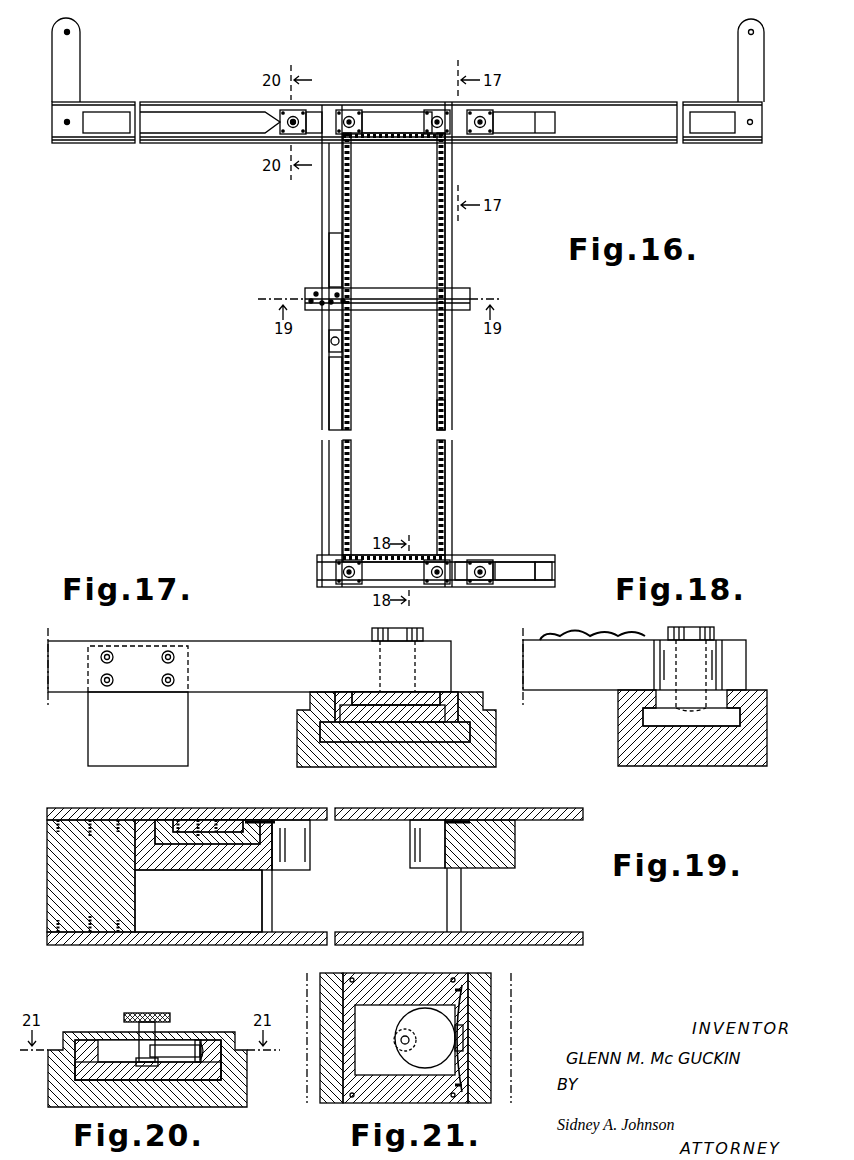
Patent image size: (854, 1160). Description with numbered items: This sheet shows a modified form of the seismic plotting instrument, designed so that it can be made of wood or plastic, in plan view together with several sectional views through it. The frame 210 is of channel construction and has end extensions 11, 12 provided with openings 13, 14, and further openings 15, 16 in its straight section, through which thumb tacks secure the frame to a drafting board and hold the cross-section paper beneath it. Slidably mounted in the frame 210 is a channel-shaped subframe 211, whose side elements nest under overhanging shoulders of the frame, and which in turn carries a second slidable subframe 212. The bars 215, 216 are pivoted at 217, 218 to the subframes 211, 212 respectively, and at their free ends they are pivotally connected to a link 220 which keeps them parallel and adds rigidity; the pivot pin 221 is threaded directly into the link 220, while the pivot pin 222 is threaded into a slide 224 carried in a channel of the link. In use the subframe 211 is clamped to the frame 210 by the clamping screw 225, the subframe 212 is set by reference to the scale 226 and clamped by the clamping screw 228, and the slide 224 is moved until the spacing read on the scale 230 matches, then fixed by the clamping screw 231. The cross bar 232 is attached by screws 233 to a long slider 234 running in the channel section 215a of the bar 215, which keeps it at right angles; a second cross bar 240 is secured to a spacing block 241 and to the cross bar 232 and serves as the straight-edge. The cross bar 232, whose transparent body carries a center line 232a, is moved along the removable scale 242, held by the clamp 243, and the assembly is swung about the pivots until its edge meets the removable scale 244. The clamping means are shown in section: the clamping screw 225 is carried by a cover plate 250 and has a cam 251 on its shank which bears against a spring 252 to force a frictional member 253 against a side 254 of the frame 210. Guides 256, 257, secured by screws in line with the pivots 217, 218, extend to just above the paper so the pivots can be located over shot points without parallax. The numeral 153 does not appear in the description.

In FIG. 16, the extension 11 is at (72, 73).
In FIG. 16, the extension 12 is at (746, 62).
In FIG. 16, the opening 13 is at (70, 33).
In FIG. 16, the opening 14 is at (748, 32).
In FIG. 16, the opening 15 is at (63, 122).
In FIG. 16, the opening 16 is at (753, 124).
In FIG. 20, the spring 153 is at (202, 1054).
In FIG. 16, the frame 210 is at (170, 102).
In FIG. 17, the frame 210 is at (300, 730).
In FIG. 20, the frame 210 is at (56, 1087).
In FIG. 21, the frame 210 is at (485, 1080).
In FIG. 16, the subframe 211 is at (316, 118).
In FIG. 17, the subframe 211 is at (337, 740).
In FIG. 20, the subframe 211 is at (222, 1065).
In FIG. 21, the subframe 211 is at (340, 1100).
In FIG. 16, the second slidable subframe 212 is at (520, 118).
In FIG. 17, the second slidable subframe 212 is at (432, 709).
In FIG. 16, the bar 215 is at (330, 215).
In FIG. 19, the bar 215 is at (172, 870).
In FIG. 16, the channel section 215a is at (333, 392).
In FIG. 16, the bar 216 is at (450, 254).
In FIG. 17, the bar 216 is at (211, 680).
In FIG. 18, the bar 216 is at (740, 662).
In FIG. 19, the bar 216 is at (505, 850).
In FIG. 16, the pivot 217 is at (354, 117).
In FIG. 16, the pivot pin 218 is at (433, 115).
In FIG. 17, the pivot pin 218 is at (412, 628).
In FIG. 16, the link 220 is at (493, 556).
In FIG. 18, the link 220 is at (655, 766).
In FIG. 16, the pivot pin 221 is at (352, 580).
In FIG. 16, the pivot pin 222 is at (440, 580).
In FIG. 18, the pivot pin 222 is at (710, 630).
In FIG. 16, the slide 224 is at (460, 556).
In FIG. 18, the slide 224 is at (652, 718).
In FIG. 16, the clamping screw 225 is at (287, 127).
In FIG. 20, the clamping screw 225 is at (160, 1013).
In FIG. 21, the clamping screw 225 is at (403, 1044).
In FIG. 16, the scale 226 is at (400, 136).
In FIG. 16, the clamping screw 228 is at (487, 117).
In FIG. 16, the scale 230 is at (348, 555).
In FIG. 16, the clamping screw 231 is at (482, 581).
In FIG. 16, the cross bar 232 is at (375, 290).
In FIG. 19, the cross bar 232 is at (405, 807).
In FIG. 16, the center line 232a is at (410, 302).
In FIG. 16, the screws 233 is at (349, 287).
In FIG. 19, the screws 233 is at (215, 818).
In FIG. 16, the slider 234 is at (336, 252).
In FIG. 19, the slider 234 is at (232, 820).
In FIG. 19, the second cross bar 240 is at (135, 946).
In FIG. 19, the spacing block 241 is at (122, 924).
In FIG. 16, the removable scale 242 is at (349, 396).
In FIG. 19, the removable scale 242 is at (288, 803).
In FIG. 16, the clamp 243 is at (331, 343).
In FIG. 16, the removable scale 244 is at (438, 427).
In FIG. 18, the removable scale 244 is at (530, 640).
In FIG. 19, the removable scale 244 is at (470, 818).
In FIG. 16, the cover plate 250 is at (282, 118).
In FIG. 20, the cover plate 250 is at (100, 1032).
In FIG. 20, the cam 251 is at (221, 1080).
In FIG. 21, the cam 251 is at (410, 1028).
In FIG. 20, the spring 252 is at (200, 1048).
In FIG. 21, the spring 252 is at (462, 1005).
In FIG. 20, the frictional member 253 is at (170, 1050).
In FIG. 21, the frictional member 253 is at (463, 1035).
In FIG. 21, the side 254 is at (463, 1058).
In FIG. 16, the guide 256 is at (349, 197).
In FIG. 19, the guide 256 is at (270, 888).
In FIG. 16, the guide 257 is at (437, 200).
In FIG. 17, the guide 257 is at (178, 755).
In FIG. 19, the guide 257 is at (456, 894).